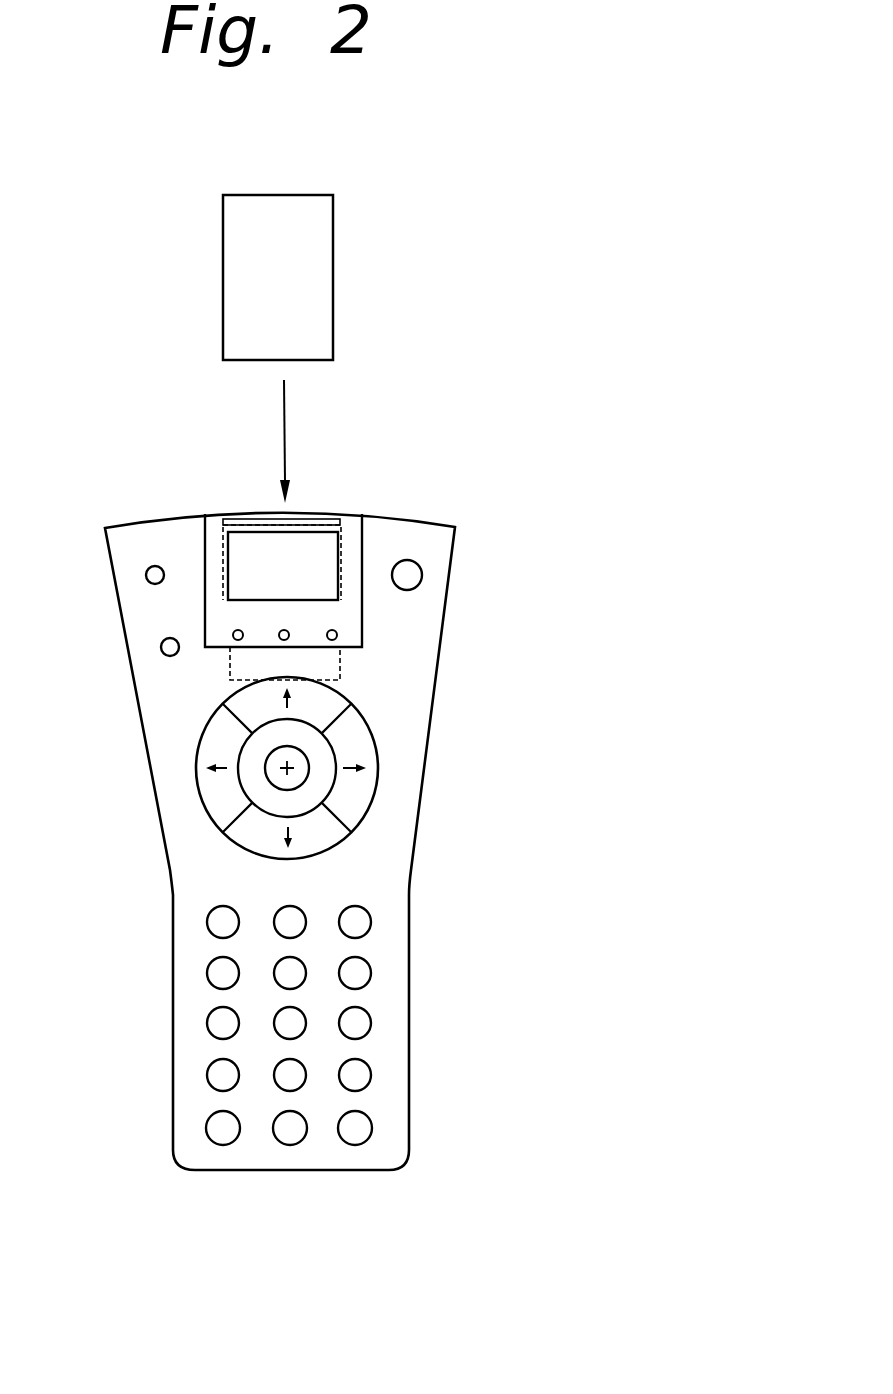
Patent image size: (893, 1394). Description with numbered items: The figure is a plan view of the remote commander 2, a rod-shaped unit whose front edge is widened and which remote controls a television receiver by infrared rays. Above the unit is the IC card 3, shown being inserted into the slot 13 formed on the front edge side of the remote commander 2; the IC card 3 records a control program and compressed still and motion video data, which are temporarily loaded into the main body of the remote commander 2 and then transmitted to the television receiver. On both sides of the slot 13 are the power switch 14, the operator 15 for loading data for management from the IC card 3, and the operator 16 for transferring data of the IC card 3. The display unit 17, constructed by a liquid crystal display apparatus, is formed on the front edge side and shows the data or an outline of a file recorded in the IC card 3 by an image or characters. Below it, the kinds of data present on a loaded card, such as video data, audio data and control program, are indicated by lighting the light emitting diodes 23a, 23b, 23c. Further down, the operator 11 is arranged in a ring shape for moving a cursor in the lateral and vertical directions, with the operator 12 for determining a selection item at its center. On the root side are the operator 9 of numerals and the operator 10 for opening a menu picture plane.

The remote commander 2 is at (292, 825).
The IC card 3 is at (322, 267).
The operator of numerals 9 is at (405, 997).
The operator for opening a menu picture plane 10 is at (363, 1130).
The operator for moving a cursor 11 is at (410, 741).
The operator for determining a selection item 12 is at (300, 778).
The slot 13 is at (360, 497).
The power switch 14 is at (415, 575).
The operator for loading data 15 is at (161, 647).
The operator for transferring data 16 is at (146, 575).
The display unit 17 is at (357, 580).
The light emitting diode 23a is at (236, 640).
The light emitting diode 23b is at (282, 640).
The light emitting diode 23c is at (335, 638).